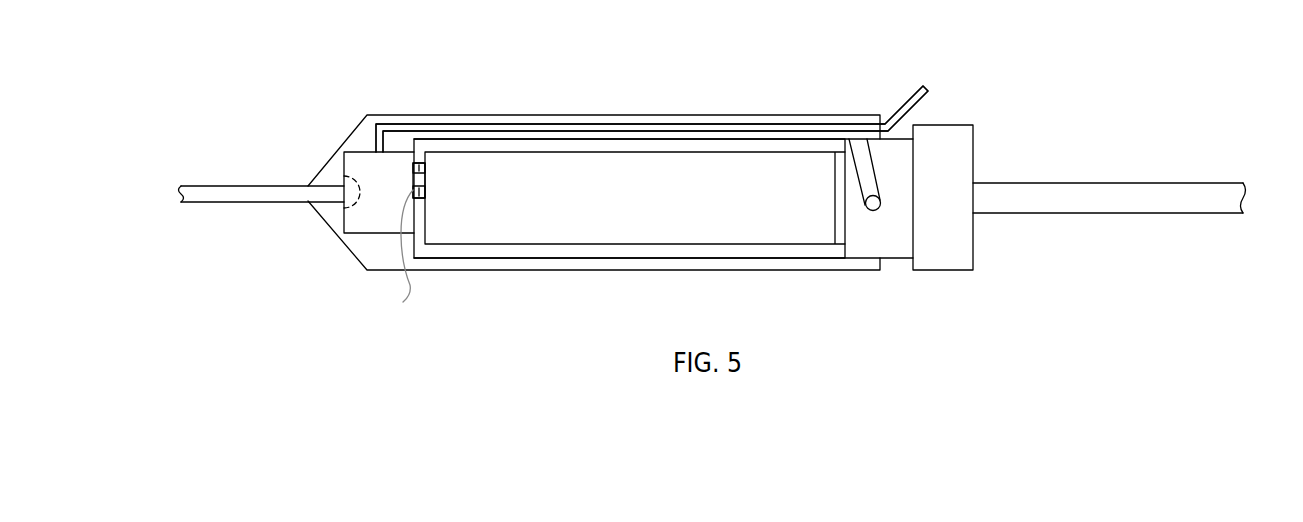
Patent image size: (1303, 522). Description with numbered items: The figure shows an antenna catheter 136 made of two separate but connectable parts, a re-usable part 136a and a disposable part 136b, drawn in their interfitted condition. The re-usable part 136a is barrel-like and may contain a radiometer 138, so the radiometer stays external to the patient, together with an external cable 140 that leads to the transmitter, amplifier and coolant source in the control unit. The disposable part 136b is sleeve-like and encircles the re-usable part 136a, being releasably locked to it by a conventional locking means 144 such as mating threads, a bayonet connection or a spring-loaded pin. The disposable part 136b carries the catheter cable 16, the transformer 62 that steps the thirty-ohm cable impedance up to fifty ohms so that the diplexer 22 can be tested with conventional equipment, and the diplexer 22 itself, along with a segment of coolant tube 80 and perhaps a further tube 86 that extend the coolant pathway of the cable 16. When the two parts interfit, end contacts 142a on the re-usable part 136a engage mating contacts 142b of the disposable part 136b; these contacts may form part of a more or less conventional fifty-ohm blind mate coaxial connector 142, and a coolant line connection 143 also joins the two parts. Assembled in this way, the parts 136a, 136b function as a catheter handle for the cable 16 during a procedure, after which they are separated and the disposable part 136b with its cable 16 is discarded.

The catheter cable 16 is at (212, 192).
The diplexer 22 is at (350, 228).
The transformer 62 is at (341, 203).
The coolant tube 80 is at (835, 127).
The tube 86 is at (652, 119).
The antenna catheter 136 is at (430, 63).
The re-usable part 136a is at (962, 143).
The disposable part 136b is at (367, 116).
The radiometer 138 is at (721, 213).
The external cable 140 is at (1200, 197).
The blind mate coaxial connector 142 is at (445, 179).
The end contacts 142a is at (425, 171).
The mating contacts 142b is at (414, 169).
The coolant line connection 143 is at (399, 258).
The locking means 144 is at (889, 224).